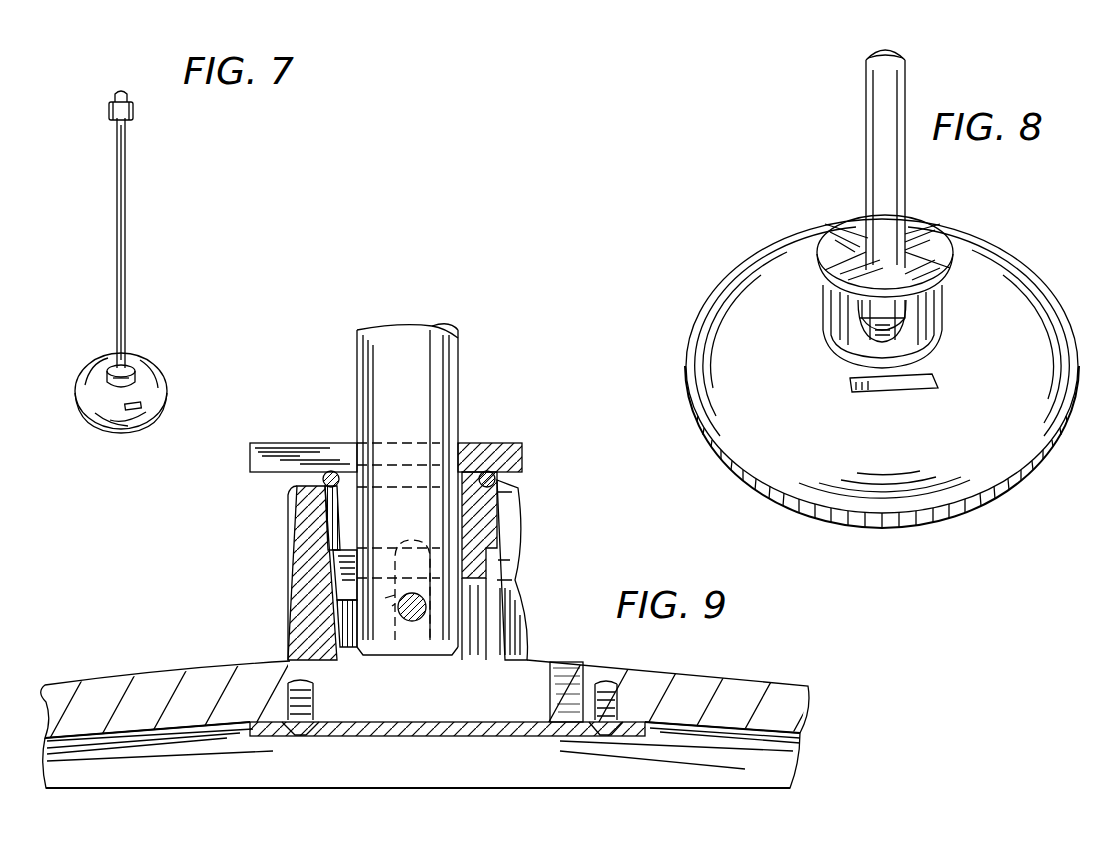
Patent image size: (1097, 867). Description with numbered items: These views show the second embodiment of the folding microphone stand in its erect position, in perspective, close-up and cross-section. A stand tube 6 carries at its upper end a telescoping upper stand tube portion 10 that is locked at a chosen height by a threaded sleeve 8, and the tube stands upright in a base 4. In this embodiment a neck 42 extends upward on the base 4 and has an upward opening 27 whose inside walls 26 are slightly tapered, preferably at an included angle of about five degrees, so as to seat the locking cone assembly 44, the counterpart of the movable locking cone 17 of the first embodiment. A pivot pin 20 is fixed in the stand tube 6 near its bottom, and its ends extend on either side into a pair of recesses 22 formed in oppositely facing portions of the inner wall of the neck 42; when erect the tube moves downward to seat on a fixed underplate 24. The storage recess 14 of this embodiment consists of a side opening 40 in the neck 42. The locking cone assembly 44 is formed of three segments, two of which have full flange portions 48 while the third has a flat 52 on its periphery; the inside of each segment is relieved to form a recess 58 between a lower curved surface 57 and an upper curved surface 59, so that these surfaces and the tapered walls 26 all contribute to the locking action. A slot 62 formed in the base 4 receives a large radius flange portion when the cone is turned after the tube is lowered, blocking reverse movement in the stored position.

In FIG. 7, the base 4 is at (153, 384).
In FIG. 8, the base 4 is at (735, 302).
In FIG. 9, the base 4 is at (180, 678).
In FIG. 7, the stand tube 6 is at (126, 258).
In FIG. 8, the stand tube 6 is at (866, 118).
In FIG. 9, the stand tube 6 is at (445, 360).
In FIG. 7, the threaded sleeve 8 is at (130, 112).
In FIG. 7, the upper stand tube portion 10 is at (124, 92).
In FIG. 9, the storage recess 14 is at (340, 428).
In FIG. 7, the locking cone 17 is at (105, 364).
In FIG. 9, the pivot pin 20 is at (426, 604).
In FIG. 9, the recesses 22 is at (340, 595).
In FIG. 9, the underplate 24 is at (430, 738).
In FIG. 9, the inside walls 26 is at (322, 520).
In FIG. 9, the upward opening 27 is at (335, 590).
In FIG. 8, the side opening 40 is at (856, 358).
In FIG. 9, the side opening 40 is at (535, 560).
In FIG. 8, the neck 42 is at (838, 312).
In FIG. 9, the neck 42 is at (297, 540).
In FIG. 8, the locking cone assembly 44 is at (948, 216).
In FIG. 8, the flange portions 48 is at (828, 258).
In FIG. 9, the flange portions 48 is at (252, 446).
In FIG. 8, the flat 52 is at (940, 255).
In FIG. 9, the flat 52 is at (522, 458).
In FIG. 9, the lower curved surface 57 is at (460, 550).
In FIG. 9, the recess 58 is at (470, 440).
In FIG. 9, the upper curved surface 59 is at (360, 440).
In FIG. 8, the slot 62 is at (890, 404).
In FIG. 9, the slot 62 is at (570, 662).